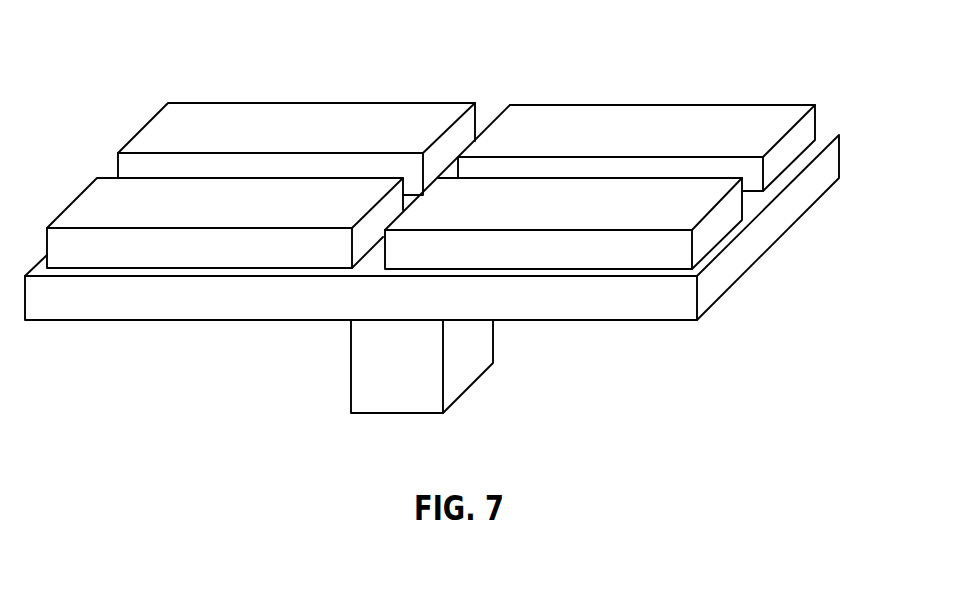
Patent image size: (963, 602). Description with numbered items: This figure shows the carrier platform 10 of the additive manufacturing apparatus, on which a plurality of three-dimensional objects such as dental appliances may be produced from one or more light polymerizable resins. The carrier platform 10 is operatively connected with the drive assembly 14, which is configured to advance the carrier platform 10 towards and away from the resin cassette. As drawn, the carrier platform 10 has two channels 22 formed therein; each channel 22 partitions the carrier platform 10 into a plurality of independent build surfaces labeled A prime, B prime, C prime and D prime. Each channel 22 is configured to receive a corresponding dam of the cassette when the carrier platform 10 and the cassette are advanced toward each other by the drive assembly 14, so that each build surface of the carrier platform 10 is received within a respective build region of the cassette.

The carrier platform 10 is at (451, 209).
The drive assembly 14 is at (460, 369).
The channel 22 is at (380, 264).